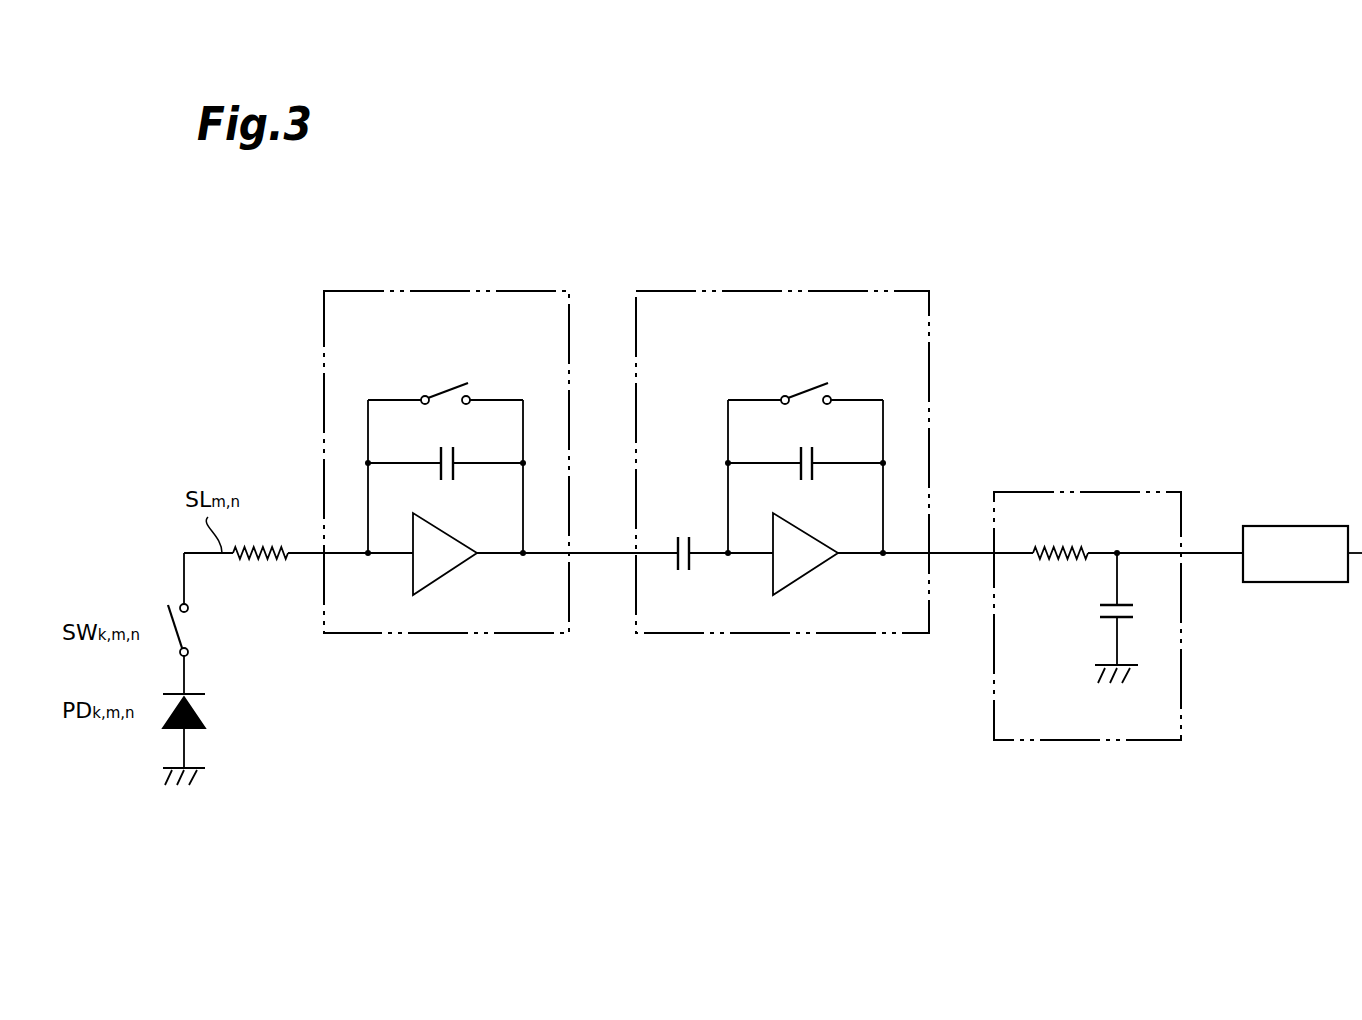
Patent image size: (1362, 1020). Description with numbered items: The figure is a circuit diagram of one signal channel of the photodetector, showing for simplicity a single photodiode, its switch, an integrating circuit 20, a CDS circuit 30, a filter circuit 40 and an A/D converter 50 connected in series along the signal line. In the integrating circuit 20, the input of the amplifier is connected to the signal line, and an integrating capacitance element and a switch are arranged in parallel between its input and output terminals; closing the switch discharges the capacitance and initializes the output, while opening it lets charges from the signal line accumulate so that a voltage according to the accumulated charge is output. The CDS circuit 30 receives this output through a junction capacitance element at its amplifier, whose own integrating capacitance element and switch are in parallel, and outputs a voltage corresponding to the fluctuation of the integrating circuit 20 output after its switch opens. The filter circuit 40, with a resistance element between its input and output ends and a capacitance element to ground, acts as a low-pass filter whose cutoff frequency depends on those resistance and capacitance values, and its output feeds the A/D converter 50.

The integrating circuit 20 is at (378, 290).
The CDS circuit 30 is at (708, 290).
The filter circuit 40 is at (1048, 491).
The A/D converter 50 is at (1308, 525).